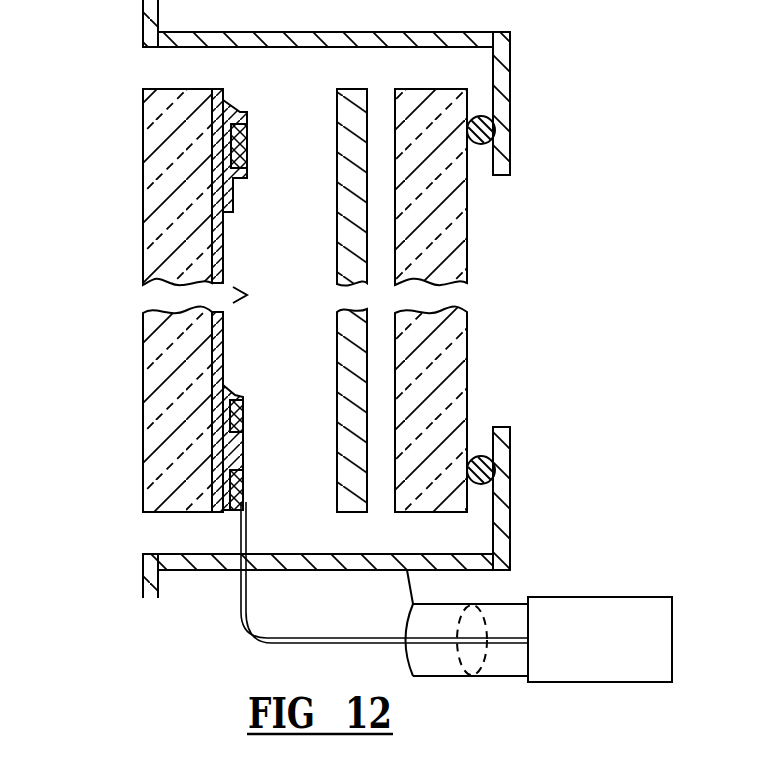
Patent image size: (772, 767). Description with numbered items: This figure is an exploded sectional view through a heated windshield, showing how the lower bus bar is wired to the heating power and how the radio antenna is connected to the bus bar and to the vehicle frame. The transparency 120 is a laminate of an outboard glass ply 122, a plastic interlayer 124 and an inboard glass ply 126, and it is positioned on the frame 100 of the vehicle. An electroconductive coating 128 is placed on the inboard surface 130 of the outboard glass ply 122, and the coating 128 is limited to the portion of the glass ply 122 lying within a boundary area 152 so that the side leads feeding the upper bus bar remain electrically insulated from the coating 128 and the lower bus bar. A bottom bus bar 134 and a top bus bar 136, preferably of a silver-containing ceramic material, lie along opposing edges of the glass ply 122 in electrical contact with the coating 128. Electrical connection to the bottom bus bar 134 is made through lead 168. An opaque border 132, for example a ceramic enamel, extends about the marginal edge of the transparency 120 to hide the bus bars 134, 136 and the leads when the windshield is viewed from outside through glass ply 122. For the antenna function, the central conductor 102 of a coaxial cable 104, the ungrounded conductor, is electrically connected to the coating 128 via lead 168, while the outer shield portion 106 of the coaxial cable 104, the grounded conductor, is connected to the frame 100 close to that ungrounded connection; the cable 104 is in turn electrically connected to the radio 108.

The frame 100 is at (510, 92).
The central conductor 102 is at (248, 637).
The coaxial cable 104 is at (472, 676).
The outer shield portion 106 is at (407, 591).
The radio 108 is at (605, 597).
The transparency 120 is at (168, 305).
The outboard glass ply 122 is at (143, 129).
The plastic interlayer 124 is at (352, 88).
The inboard glass ply 126 is at (467, 232).
The electroconductive coating 128 is at (268, 296).
The inboard surface 130 is at (221, 242).
The opaque border 132 is at (227, 85).
The bottom bus bar 134 is at (243, 412).
The top bus bar 136 is at (248, 136).
The boundary area 152 is at (230, 110).
The lead 168 is at (242, 483).